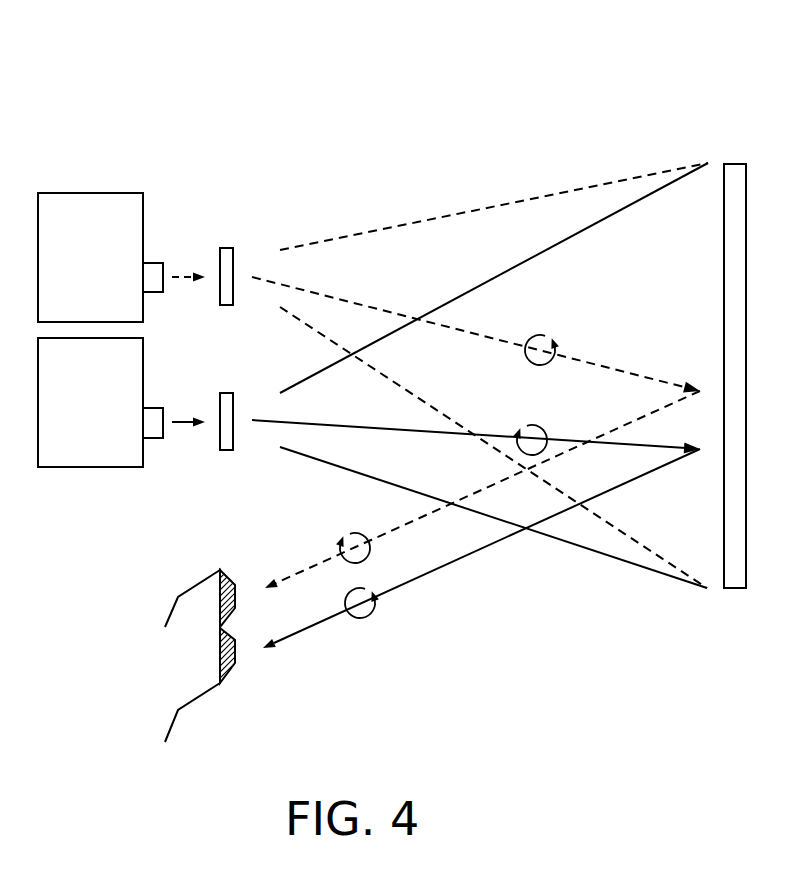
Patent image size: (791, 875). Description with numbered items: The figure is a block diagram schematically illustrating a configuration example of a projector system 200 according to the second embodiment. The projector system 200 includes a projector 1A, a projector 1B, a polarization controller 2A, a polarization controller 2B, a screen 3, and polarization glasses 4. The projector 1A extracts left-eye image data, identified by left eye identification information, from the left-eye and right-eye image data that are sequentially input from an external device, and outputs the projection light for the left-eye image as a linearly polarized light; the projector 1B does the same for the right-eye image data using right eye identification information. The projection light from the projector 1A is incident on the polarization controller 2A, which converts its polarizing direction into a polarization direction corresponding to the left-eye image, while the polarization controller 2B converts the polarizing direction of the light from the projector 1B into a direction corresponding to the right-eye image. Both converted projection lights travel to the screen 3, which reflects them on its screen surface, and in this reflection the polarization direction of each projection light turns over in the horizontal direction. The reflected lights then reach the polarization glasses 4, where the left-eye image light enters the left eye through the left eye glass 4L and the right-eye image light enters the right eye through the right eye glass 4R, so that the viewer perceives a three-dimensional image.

The projector system 200 is at (388, 130).
The projector 1A is at (98, 193).
The projector 1B is at (93, 468).
The polarization controller 2A is at (230, 247).
The polarization controller 2B is at (230, 392).
The screen 3 is at (737, 163).
The polarization glasses 4 is at (168, 617).
The left eye glass 4L is at (233, 585).
The right eye glass 4R is at (233, 662).